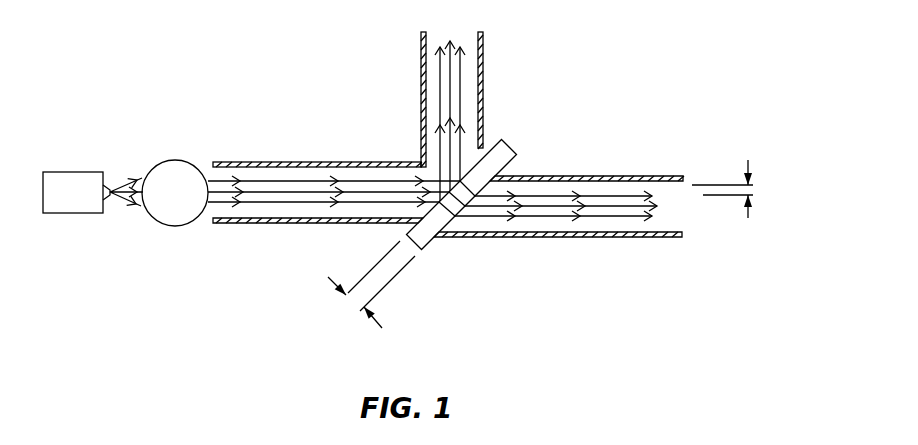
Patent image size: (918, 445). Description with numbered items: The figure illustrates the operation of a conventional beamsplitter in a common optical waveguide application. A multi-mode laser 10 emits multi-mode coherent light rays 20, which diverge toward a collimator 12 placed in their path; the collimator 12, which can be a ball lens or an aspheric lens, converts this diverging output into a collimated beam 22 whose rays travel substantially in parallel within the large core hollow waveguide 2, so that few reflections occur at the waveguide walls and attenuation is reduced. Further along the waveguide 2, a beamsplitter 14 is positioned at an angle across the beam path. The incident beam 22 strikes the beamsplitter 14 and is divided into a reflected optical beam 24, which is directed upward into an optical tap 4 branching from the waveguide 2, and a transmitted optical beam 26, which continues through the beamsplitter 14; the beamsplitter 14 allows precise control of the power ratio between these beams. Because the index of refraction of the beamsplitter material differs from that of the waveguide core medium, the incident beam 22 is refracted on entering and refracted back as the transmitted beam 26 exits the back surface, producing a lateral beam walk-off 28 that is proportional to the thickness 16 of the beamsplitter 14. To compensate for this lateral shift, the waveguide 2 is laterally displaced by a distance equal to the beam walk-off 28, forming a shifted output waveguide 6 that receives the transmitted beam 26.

The multi-mode laser 10 is at (50, 216).
The collimator 12 is at (176, 213).
The multi-mode coherent light rays 20 is at (135, 180).
The large core hollow waveguide 2 is at (250, 162).
The optical tap 4 is at (420, 81).
The collimated beam 22 is at (274, 202).
The reflected optical beam 24 is at (462, 78).
The beamsplitter 14 is at (424, 250).
The thickness 16 is at (354, 302).
The transmitted optical beam 26 is at (553, 216).
The shifted output waveguide 6 is at (673, 238).
The beam walk-off 28 is at (750, 191).